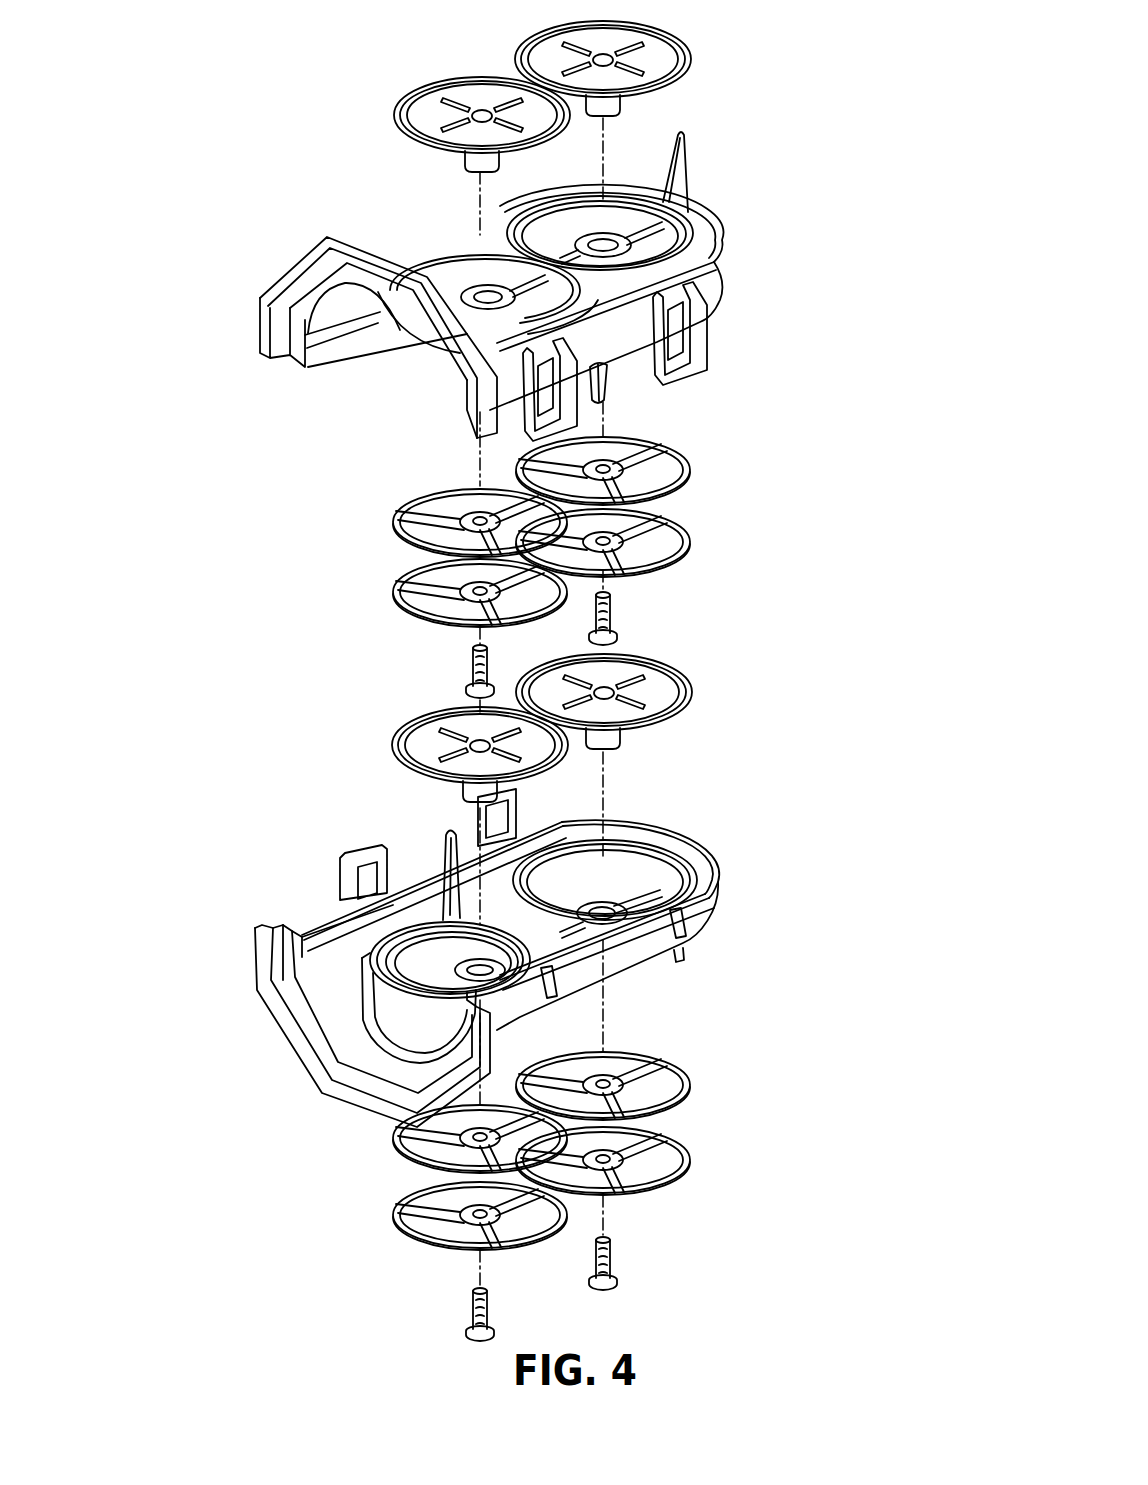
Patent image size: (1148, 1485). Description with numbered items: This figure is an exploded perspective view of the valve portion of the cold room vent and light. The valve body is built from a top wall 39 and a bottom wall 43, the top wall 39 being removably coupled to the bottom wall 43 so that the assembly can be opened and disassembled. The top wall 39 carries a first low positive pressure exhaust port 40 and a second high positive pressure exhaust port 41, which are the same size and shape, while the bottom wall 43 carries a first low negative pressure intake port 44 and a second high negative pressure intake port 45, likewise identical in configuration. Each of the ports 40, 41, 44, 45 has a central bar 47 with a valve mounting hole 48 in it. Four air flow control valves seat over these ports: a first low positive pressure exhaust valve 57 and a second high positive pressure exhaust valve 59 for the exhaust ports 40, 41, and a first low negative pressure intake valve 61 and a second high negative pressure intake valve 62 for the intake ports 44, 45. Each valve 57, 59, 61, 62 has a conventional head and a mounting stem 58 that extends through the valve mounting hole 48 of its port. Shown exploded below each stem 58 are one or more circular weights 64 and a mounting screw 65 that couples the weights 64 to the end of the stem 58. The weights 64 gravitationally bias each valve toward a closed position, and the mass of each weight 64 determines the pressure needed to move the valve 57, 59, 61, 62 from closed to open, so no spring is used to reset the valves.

The top wall 39 is at (713, 293).
The first low positive pressure exhaust port 40 is at (520, 317).
The second high positive pressure exhaust port 41 is at (700, 232).
The bottom wall 43 is at (340, 1003).
The first low negative pressure intake port 44 is at (627, 883).
The second high negative pressure intake port 45 is at (430, 945).
The central bar 47 is at (647, 230).
The valve mounting hole 48 is at (600, 243).
The first low positive pressure exhaust valve 57 is at (417, 132).
The mounting stem 58 is at (613, 105).
The second high positive pressure exhaust valve 59 is at (685, 44).
The first low negative pressure intake valve 61 is at (413, 730).
The second high negative pressure intake valve 62 is at (668, 665).
The circular weight 64 is at (398, 587).
The mounting screw 65 is at (613, 1270).